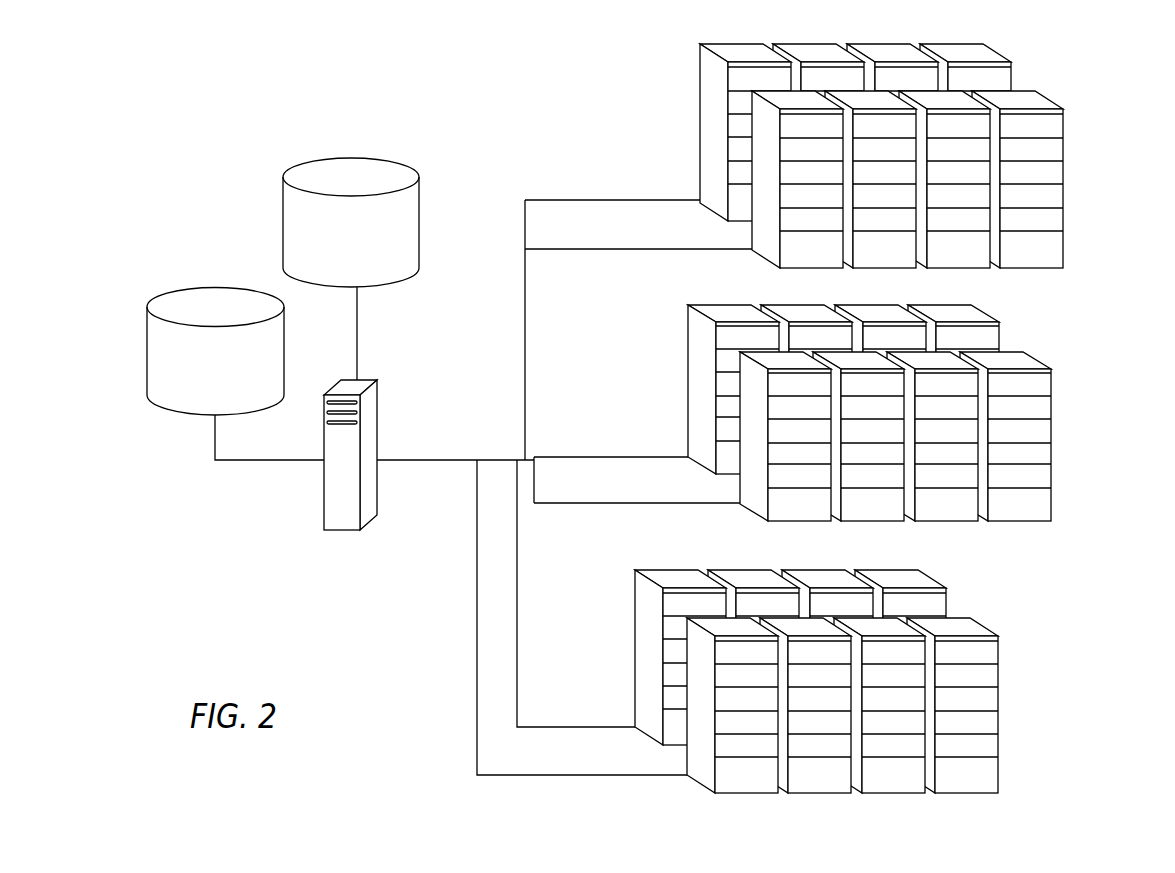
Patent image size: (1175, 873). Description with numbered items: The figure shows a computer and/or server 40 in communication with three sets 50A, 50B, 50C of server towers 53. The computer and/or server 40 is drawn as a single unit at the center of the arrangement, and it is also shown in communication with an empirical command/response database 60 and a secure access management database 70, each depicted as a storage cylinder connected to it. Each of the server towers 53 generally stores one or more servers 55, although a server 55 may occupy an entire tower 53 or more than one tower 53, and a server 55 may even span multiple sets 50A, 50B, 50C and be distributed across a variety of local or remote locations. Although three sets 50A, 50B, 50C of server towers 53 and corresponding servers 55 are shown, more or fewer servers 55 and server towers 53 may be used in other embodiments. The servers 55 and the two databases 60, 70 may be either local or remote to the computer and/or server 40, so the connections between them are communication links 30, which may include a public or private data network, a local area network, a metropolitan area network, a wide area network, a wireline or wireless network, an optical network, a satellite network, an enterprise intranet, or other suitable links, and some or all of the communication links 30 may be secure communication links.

The communication links 30 is at (357, 356).
The computer and/or server 40 is at (322, 507).
The set of server towers 50A is at (907, 156).
The set of server towers 50B is at (1097, 379).
The set of server towers 50C is at (1053, 683).
The server tower 53 is at (692, 102).
The server 55 is at (1065, 199).
The empirical command/response database 60 is at (320, 162).
The secure access management database 70 is at (172, 290).